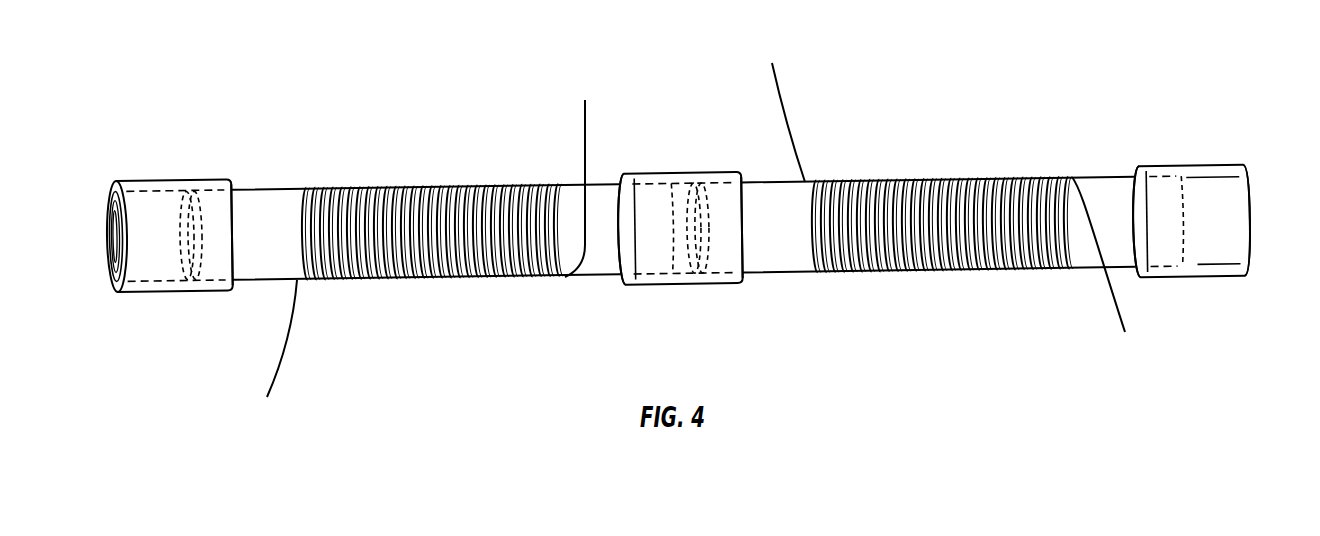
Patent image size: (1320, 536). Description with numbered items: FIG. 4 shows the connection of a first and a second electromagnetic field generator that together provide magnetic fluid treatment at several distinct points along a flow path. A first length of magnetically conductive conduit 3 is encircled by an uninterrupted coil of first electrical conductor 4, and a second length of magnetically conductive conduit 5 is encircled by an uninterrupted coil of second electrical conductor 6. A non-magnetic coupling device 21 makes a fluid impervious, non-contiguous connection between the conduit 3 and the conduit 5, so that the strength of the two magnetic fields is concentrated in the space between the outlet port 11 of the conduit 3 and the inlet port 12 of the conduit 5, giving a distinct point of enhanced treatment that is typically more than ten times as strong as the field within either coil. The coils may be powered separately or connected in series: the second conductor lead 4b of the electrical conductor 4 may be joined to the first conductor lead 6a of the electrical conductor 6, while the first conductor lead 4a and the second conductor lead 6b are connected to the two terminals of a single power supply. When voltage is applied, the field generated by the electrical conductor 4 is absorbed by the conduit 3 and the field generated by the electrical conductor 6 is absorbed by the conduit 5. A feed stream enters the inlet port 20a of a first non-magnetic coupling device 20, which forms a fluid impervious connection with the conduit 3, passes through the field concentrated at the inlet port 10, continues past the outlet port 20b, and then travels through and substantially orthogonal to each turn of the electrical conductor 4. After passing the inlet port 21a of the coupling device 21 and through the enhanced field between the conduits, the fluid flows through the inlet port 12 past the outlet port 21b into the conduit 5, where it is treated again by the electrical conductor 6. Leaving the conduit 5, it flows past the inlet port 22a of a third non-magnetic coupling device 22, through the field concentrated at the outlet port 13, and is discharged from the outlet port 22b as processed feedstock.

The first length of conduit 3 is at (285, 248).
The first electrical conductor 4 is at (453, 183).
The first conductor lead 4a is at (270, 377).
The second conductor lead 4b is at (582, 130).
The second length of conduit 5 is at (794, 241).
The second electrical conductor 6 is at (967, 180).
The first conductor lead 6a is at (781, 85).
The second conductor lead 6b is at (1120, 327).
The inlet port 10 is at (190, 220).
The outlet port 11 is at (672, 217).
The inlet port 12 is at (700, 235).
The outlet port 13 is at (1185, 210).
The first non-magnetic coupling device 20 is at (165, 247).
The inlet port 20a is at (113, 258).
The outlet port 20b is at (230, 187).
The non-magnetic coupling device 21 is at (683, 232).
The inlet port 21a is at (620, 180).
The outlet port 21b is at (742, 277).
The third non-magnetic coupling device 22 is at (1218, 231).
The inlet port 22a is at (1132, 172).
The outlet port 22b is at (1257, 222).